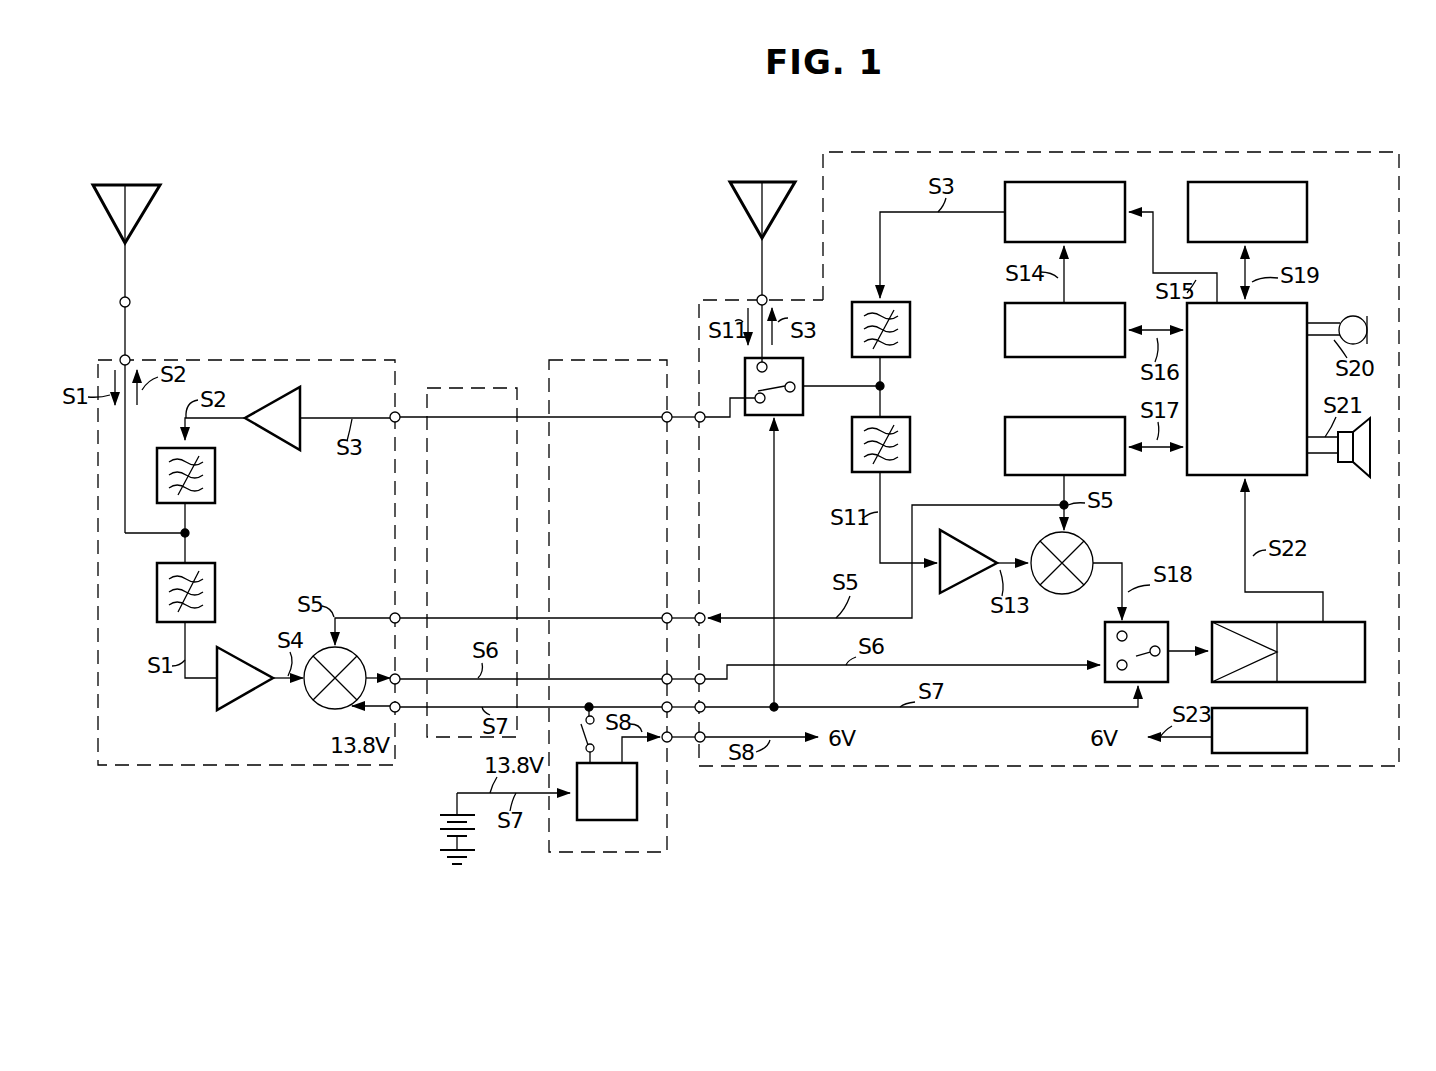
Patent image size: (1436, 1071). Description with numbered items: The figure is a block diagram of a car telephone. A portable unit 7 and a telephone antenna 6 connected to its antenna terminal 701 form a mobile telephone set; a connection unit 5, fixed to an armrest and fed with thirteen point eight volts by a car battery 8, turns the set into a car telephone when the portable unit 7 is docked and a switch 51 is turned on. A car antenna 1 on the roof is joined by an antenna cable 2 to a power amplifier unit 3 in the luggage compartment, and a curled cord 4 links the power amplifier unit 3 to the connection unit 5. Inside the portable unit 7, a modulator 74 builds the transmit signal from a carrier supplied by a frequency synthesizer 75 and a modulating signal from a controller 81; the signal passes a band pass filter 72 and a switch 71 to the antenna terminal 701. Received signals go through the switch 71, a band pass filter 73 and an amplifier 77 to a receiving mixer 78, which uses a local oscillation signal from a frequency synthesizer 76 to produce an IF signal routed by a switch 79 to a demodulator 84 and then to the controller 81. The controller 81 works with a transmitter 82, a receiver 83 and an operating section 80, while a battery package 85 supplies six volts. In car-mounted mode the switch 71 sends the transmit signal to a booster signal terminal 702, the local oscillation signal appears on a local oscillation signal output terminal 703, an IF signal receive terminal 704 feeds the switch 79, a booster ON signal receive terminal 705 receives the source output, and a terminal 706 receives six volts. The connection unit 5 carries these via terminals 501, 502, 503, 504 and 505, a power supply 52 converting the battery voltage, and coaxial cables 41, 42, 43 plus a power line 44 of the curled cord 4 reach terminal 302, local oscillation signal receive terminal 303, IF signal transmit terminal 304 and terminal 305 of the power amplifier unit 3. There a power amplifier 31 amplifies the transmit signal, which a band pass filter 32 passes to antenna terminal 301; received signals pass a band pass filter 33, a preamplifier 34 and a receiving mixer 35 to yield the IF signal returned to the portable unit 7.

The car antenna 1 is at (143, 185).
The antenna cable 2 is at (127, 346).
The power amplifier unit 3 is at (214, 360).
The curled cord 4 is at (462, 388).
The connection unit 5 is at (597, 360).
The telephone antenna 6 is at (750, 185).
The portable unit 7 is at (988, 152).
The car battery 8 is at (440, 822).
The power amplifier 31 is at (302, 407).
The band pass filter 32 is at (216, 470).
The band pass filter 33 is at (216, 579).
The preamplifier 34 is at (240, 664).
The receiving mixer 35 is at (326, 706).
The coaxial cable 41 is at (484, 418).
The coaxial cable 42 is at (458, 617).
The coaxial cable 43 is at (440, 678).
The power line 44 is at (432, 707).
The switch 51 is at (578, 735).
The power supply 52 is at (620, 820).
The switch 71 is at (791, 418).
The band pass filter 72 is at (911, 326).
The band pass filter 73 is at (911, 441).
The modulator 74 is at (1125, 204).
The frequency synthesizer 75 is at (1088, 302).
The frequency synthesizer 76 is at (1058, 416).
The amplifier 77 is at (975, 560).
The receiving mixer 78 is at (1090, 558).
The switch 79 is at (1105, 640).
The operating section 80 is at (1307, 204).
The controller 81 is at (1285, 478).
The transmitter 82 is at (1352, 316).
The receiver 83 is at (1360, 478).
The demodulator 84 is at (1340, 620).
The battery package 85 is at (1308, 730).
The antenna terminal 301 is at (122, 356).
The terminal 302 is at (392, 412).
The local oscillation signal receive terminal 303 is at (392, 613).
The IF signal transmit terminal 304 is at (392, 673).
The terminal 305 is at (398, 712).
The terminal 501 is at (662, 413).
The terminal 502 is at (662, 613).
The terminal 503 is at (662, 674).
The terminal 504 is at (662, 702).
The terminal 505 is at (669, 742).
The antenna terminal 701 is at (758, 295).
The booster signal terminal 702 is at (702, 423).
The local oscillation signal output terminal 703 is at (703, 613).
The IF signal receive terminal 704 is at (703, 673).
The booster ON signal receive terminal 705 is at (703, 702).
The terminal 706 is at (704, 733).